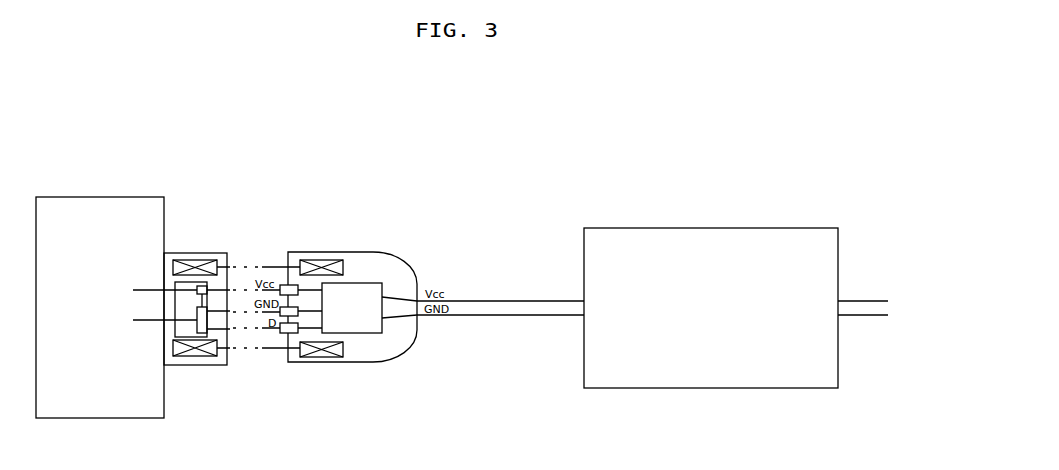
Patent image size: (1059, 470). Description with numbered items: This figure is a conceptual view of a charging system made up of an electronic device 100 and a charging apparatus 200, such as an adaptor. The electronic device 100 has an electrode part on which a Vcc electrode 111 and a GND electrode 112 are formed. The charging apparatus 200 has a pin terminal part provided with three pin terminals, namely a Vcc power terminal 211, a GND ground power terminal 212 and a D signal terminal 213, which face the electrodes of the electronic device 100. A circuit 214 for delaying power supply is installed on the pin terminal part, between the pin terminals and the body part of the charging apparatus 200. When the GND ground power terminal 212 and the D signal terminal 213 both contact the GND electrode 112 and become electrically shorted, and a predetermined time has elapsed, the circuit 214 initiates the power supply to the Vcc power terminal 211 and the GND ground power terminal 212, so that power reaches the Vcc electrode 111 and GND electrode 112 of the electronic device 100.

The electronic device 100 is at (115, 186).
The Vcc electrode 111 is at (201, 290).
The GND electrode 112 is at (203, 327).
The charging apparatus 200 is at (725, 208).
The Vcc power terminal 211 is at (288, 284).
The GND ground power terminal 212 is at (293, 312).
The D signal terminal 213 is at (290, 335).
The circuit for delaying power supply 214 is at (375, 288).